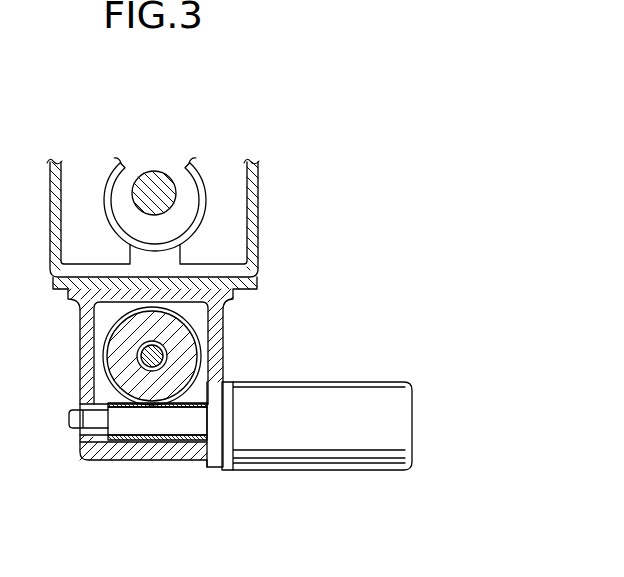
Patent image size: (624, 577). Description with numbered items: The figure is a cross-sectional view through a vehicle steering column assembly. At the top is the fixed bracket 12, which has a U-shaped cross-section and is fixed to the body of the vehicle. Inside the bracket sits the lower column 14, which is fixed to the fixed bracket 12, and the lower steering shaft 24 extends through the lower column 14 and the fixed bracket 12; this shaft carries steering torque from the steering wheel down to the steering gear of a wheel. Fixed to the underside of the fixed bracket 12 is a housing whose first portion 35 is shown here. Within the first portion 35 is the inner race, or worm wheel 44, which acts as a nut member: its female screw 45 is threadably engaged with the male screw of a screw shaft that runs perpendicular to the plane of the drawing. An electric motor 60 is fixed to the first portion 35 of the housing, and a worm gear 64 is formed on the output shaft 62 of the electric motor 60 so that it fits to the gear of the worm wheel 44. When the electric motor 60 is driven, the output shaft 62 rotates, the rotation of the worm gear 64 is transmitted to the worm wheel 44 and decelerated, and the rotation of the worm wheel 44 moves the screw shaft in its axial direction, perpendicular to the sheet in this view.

The fixed bracket 12 is at (262, 197).
The lower column 14 is at (207, 183).
The lower steering shaft 24 is at (152, 181).
The first portion of the housing 35 is at (81, 358).
The inner race (worm wheel) 44 is at (182, 338).
The female screw 45 is at (172, 351).
The electric motor 60 is at (352, 435).
The output shaft 62 is at (176, 425).
The worm gear 64 is at (143, 442).